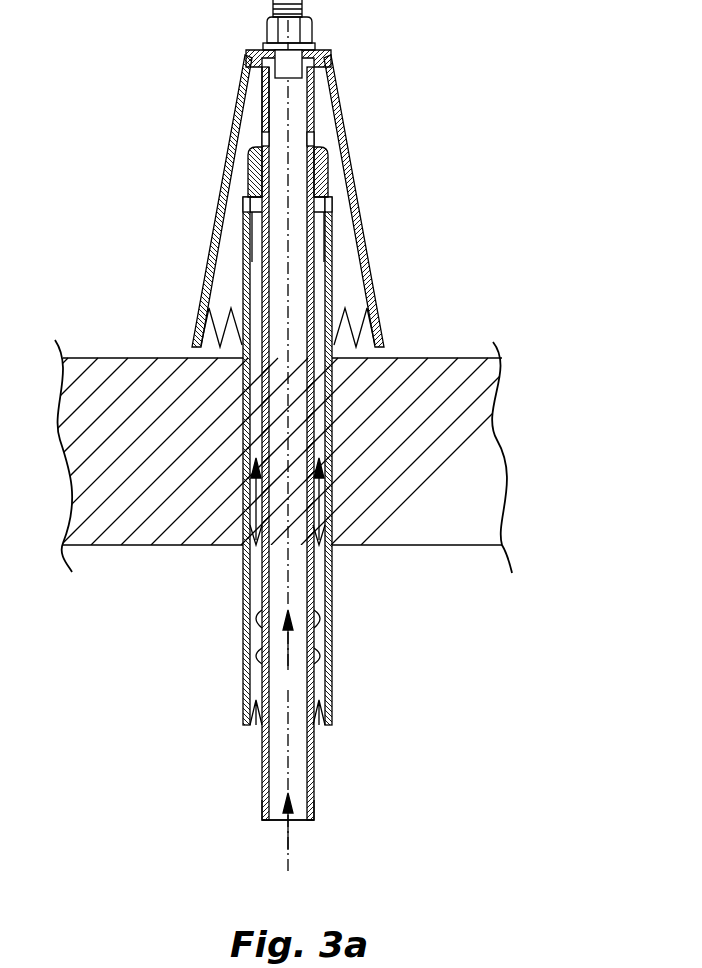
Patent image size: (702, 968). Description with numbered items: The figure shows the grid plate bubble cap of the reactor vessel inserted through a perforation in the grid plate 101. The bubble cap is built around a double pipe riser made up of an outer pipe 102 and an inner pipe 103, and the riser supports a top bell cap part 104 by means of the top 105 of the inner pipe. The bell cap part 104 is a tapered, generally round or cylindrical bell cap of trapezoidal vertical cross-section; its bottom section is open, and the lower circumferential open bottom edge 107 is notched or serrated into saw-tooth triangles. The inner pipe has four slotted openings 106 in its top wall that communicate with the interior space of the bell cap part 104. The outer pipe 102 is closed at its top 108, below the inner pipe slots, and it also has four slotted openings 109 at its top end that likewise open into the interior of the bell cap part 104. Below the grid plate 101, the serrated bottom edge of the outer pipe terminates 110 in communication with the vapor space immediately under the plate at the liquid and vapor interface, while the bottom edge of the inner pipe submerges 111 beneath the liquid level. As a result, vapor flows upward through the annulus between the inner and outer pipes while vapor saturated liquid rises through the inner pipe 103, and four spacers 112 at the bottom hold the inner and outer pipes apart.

The grid plate 101 is at (457, 358).
The outer pipe 102 is at (333, 643).
The inner pipe 103 is at (314, 580).
The bell cap part 104 is at (353, 168).
The top of the inner pipe 105 is at (313, 44).
The slotted openings 106 is at (262, 105).
The open bottom edge 107 is at (363, 320).
The top of the outer pipe 108 is at (248, 168).
The slotted openings 109 is at (245, 230).
The serrated bottom edge of the outer pipe 110 is at (250, 698).
The bottom edge of the inner pipe 111 is at (305, 820).
The spacers 112 is at (256, 623).